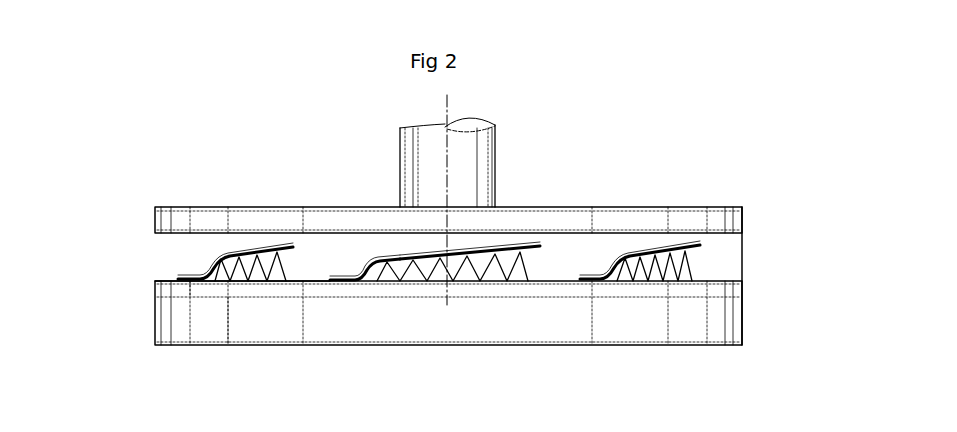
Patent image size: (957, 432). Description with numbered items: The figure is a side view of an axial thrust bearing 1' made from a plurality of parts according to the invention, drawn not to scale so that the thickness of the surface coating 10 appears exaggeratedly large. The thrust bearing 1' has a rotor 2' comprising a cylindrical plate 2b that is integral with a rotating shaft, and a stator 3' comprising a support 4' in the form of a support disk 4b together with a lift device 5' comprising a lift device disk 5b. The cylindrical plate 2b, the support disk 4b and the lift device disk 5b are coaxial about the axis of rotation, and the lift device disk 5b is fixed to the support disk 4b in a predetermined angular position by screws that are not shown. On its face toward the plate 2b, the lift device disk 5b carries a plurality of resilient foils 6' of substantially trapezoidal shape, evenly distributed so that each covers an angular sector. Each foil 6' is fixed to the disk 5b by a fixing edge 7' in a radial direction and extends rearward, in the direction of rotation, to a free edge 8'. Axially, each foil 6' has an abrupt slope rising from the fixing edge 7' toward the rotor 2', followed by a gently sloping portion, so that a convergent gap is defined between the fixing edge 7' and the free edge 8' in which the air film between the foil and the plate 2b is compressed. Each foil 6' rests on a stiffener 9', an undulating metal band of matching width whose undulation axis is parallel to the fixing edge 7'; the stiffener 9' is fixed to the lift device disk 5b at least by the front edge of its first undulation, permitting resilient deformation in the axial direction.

The thrust bearing 1' is at (515, 144).
The rotor 2' is at (448, 176).
The cylindrical plate 2b is at (695, 222).
The stator 3' is at (771, 276).
The support 4' is at (401, 330).
The support disk 4b is at (253, 335).
The lift device 5' is at (195, 258).
The lift device disk 5b is at (203, 290).
The resilient foil 6' is at (452, 331).
The fixing edge 7' is at (355, 217).
The free edge 8' is at (471, 190).
The stiffener 9' is at (426, 265).
The surface coating 10 is at (250, 248).